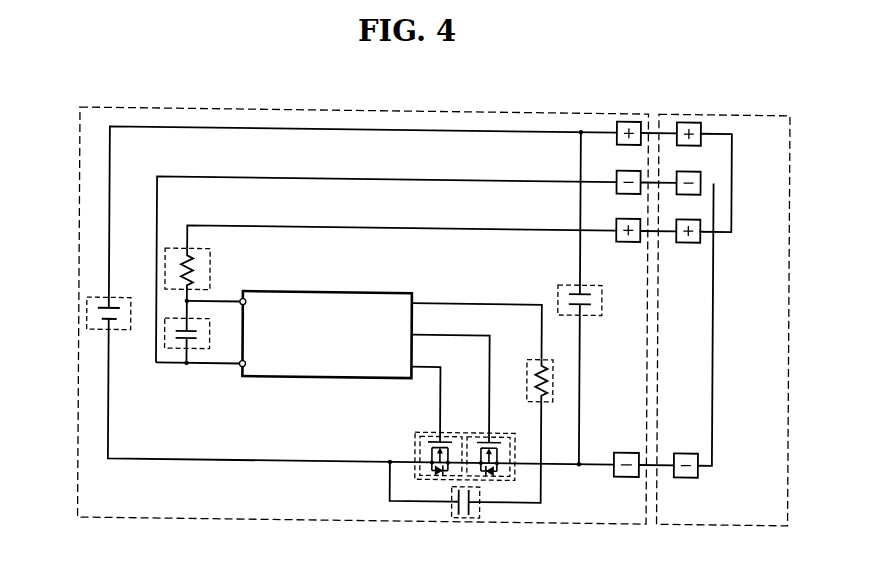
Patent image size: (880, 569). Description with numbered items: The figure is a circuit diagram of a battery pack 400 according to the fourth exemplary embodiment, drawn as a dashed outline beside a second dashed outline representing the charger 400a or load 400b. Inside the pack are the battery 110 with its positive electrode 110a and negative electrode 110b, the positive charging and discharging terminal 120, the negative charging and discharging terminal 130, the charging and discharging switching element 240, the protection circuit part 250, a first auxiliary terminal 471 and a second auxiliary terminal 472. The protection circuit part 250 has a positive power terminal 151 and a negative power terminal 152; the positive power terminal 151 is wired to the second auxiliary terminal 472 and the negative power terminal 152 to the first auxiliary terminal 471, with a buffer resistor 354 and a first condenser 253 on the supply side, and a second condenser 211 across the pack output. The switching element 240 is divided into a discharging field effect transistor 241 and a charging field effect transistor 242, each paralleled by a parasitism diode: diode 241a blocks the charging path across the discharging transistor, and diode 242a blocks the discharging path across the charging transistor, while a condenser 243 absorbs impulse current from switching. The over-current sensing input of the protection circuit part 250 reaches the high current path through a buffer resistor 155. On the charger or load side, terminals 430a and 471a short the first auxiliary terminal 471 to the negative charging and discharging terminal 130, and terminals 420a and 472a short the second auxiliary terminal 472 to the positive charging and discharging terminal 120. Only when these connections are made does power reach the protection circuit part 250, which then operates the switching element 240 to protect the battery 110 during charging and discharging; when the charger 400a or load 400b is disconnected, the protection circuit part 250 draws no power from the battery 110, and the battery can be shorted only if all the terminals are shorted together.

The battery pack 400 is at (365, 101).
The charger 400a is at (725, 302).
The load 400b is at (761, 106).
The battery 110 is at (77, 311).
The positive electrode 110a is at (109, 305).
The negative electrode 110b is at (109, 321).
The positive charging and discharging terminal 120 is at (628, 114).
The negative charging and discharging terminal 130 is at (626, 445).
The positive power terminal 151 is at (240, 297).
The negative power terminal 152 is at (241, 366).
The buffer resistor 155 is at (542, 353).
The second condenser 211 is at (603, 291).
The charging and discharging switching element 240 is at (445, 455).
The discharging field effect transistor 241 is at (431, 455).
The charging field effect transistor 242 is at (494, 456).
The parasitism diode for blocking a charging path 241a is at (441, 469).
The parasitism diode for blocking a discharging path 242a is at (488, 469).
The condenser 243 is at (468, 513).
The protection circuit part 250 is at (328, 288).
The first condenser 253 is at (166, 344).
The buffer resistor 354 is at (166, 268).
The terminal of charger or load 420a is at (688, 114).
The terminal of charger or load 430a is at (686, 445).
The first auxiliary terminal 471 is at (617, 164).
The terminal of charger or load 471a is at (713, 157).
The second auxiliary terminal 472 is at (629, 236).
The terminal of charger or load 472a is at (689, 236).